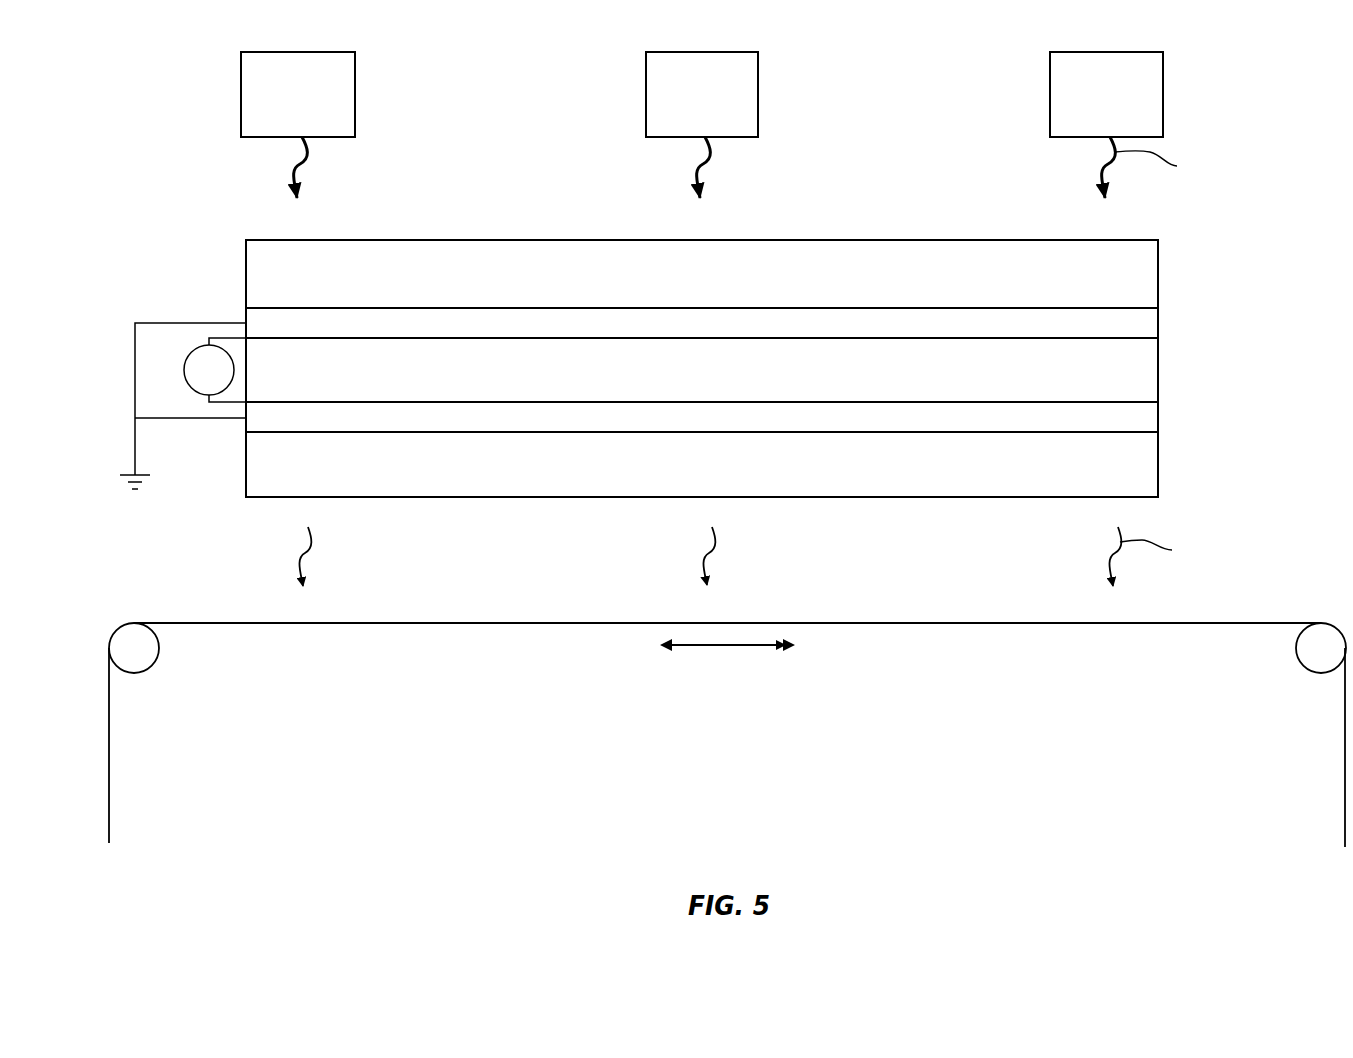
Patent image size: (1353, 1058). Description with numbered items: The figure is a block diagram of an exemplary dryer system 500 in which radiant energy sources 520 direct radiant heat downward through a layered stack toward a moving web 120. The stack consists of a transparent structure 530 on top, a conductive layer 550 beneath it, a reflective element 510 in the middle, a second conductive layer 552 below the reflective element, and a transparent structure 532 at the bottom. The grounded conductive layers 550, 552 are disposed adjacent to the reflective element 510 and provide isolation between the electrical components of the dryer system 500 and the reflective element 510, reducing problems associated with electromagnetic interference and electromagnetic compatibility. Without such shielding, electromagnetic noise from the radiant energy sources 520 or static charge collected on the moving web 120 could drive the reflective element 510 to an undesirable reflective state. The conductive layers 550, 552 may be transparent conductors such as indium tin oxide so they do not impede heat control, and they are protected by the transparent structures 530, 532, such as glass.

The dryer system 500 is at (121, 134).
The radiant energy sources 520 is at (1124, 102).
The transparent structure 530 is at (719, 299).
The conductive layer 550 is at (846, 333).
The reflective element 510 is at (719, 391).
The conductive layer 552 is at (846, 427).
The transparent structure 532 is at (719, 485).
The web 120 is at (109, 779).